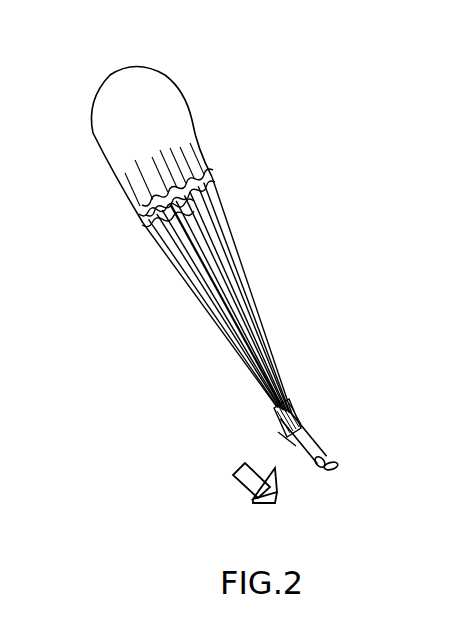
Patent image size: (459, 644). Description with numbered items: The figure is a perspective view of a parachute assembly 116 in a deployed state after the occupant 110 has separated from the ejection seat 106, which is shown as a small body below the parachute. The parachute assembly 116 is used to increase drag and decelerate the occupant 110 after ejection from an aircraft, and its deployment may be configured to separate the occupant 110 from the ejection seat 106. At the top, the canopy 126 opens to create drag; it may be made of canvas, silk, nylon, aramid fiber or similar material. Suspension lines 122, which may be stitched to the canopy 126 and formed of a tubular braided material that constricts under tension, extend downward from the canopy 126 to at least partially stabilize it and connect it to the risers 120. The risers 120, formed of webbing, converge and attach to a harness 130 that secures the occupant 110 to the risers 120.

The parachute assembly 116 is at (110, 59).
The canopy 126 is at (151, 122).
The suspension lines 122 is at (240, 233).
The risers 120 is at (287, 380).
The occupant 110 is at (276, 434).
The harness 130 is at (297, 418).
The ejection seat 106 is at (247, 478).